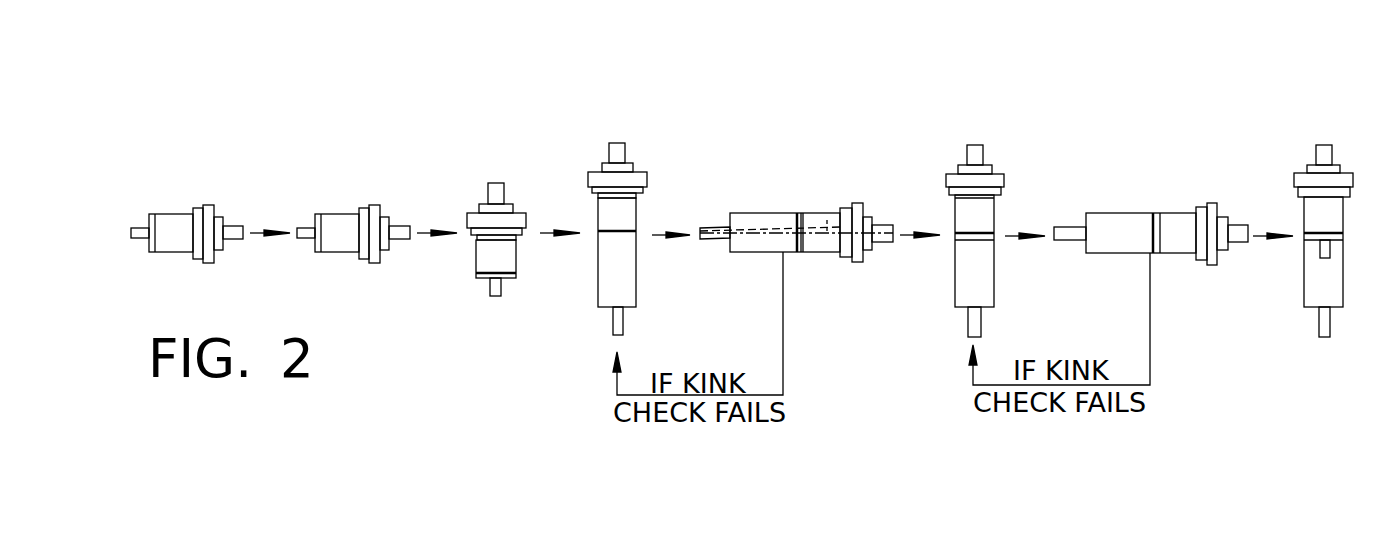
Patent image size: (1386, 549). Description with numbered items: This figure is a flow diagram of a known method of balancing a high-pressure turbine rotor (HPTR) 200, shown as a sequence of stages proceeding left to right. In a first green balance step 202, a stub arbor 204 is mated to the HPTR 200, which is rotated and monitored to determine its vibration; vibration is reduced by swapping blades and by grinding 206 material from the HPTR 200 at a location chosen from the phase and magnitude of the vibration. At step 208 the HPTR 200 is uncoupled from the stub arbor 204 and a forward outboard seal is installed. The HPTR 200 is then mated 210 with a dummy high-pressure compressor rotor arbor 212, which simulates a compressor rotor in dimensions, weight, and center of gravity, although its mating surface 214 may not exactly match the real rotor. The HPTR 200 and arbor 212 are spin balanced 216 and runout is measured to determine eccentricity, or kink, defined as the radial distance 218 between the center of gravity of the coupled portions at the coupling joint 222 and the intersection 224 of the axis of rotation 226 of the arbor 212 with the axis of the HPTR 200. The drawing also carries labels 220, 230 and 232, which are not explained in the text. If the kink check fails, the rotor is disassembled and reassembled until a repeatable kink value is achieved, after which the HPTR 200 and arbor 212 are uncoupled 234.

The high-pressure turbine rotor (HPTR) 200 is at (208, 205).
The first green balance step 202 is at (222, 150).
The stub arbor 204 is at (136, 228).
The grinding 206 is at (384, 157).
The step 208 is at (515, 153).
The mating step 210 is at (645, 106).
The dummy high-pressure compressor rotor arbor 212 is at (612, 288).
The mating surface 214 is at (598, 237).
The spin balancing step 216 is at (859, 116).
The radial distance 218 is at (827, 227).
The distal sheath section 220 is at (812, 252).
The coupling joint 222 is at (801, 252).
The intersection 224 is at (801, 213).
The axis of rotation 226 is at (771, 229).
The sixth assembly step 230 is at (1019, 114).
The seventh assembly step 232 is at (1165, 114).
The uncoupling step 234 is at (1327, 99).